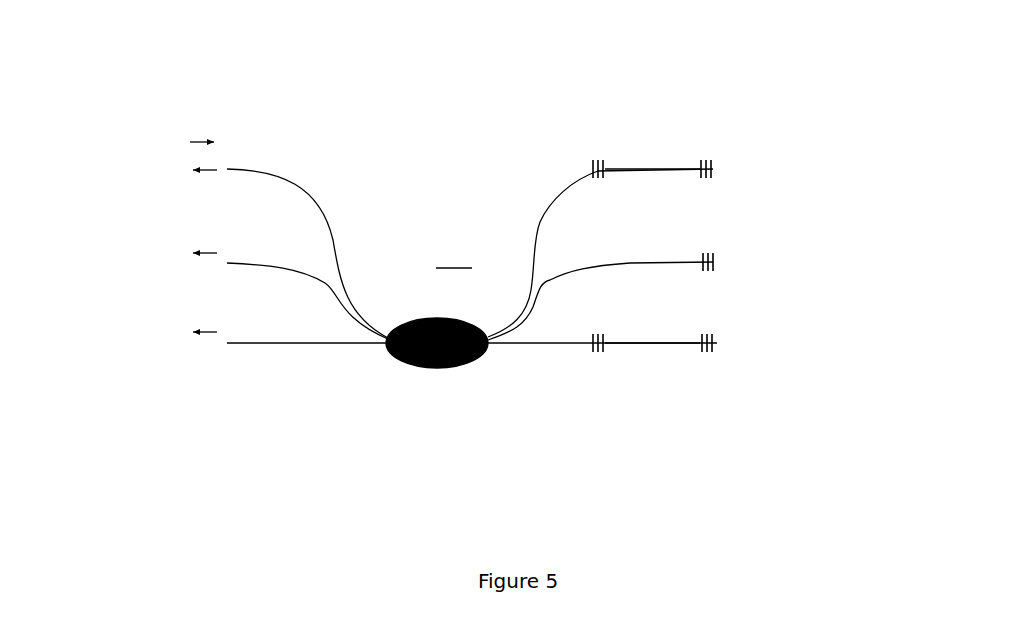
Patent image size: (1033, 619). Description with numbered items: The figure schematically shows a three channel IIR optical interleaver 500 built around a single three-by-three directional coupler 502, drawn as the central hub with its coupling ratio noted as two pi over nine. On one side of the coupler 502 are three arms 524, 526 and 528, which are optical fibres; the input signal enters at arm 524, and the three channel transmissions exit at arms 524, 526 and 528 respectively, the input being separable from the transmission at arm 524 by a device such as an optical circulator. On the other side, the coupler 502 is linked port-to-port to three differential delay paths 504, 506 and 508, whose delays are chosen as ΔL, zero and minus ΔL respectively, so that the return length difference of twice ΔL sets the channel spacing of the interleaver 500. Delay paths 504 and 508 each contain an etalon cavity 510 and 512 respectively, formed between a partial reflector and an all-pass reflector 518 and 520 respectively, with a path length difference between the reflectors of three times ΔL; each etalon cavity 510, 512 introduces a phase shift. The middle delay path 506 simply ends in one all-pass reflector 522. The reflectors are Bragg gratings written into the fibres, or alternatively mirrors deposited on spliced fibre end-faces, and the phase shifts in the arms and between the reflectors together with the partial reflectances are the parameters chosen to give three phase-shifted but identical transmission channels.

The three channel IIR optical interleaver 500 is at (308, 493).
The 3×3 directional coupler 502 is at (400, 365).
The differential delay path 504 is at (547, 345).
The differential delay path 506 is at (585, 263).
The differential delay path 508 is at (573, 172).
The etalon cavity 510 is at (678, 317).
The etalon cavity 512 is at (672, 153).
The all-pass reflector 518 is at (717, 335).
The all-pass reflector 520 is at (720, 253).
The all-pass reflector 522 is at (718, 158).
The arm 524 is at (227, 167).
The arm 526 is at (247, 250).
The arm 528 is at (253, 335).